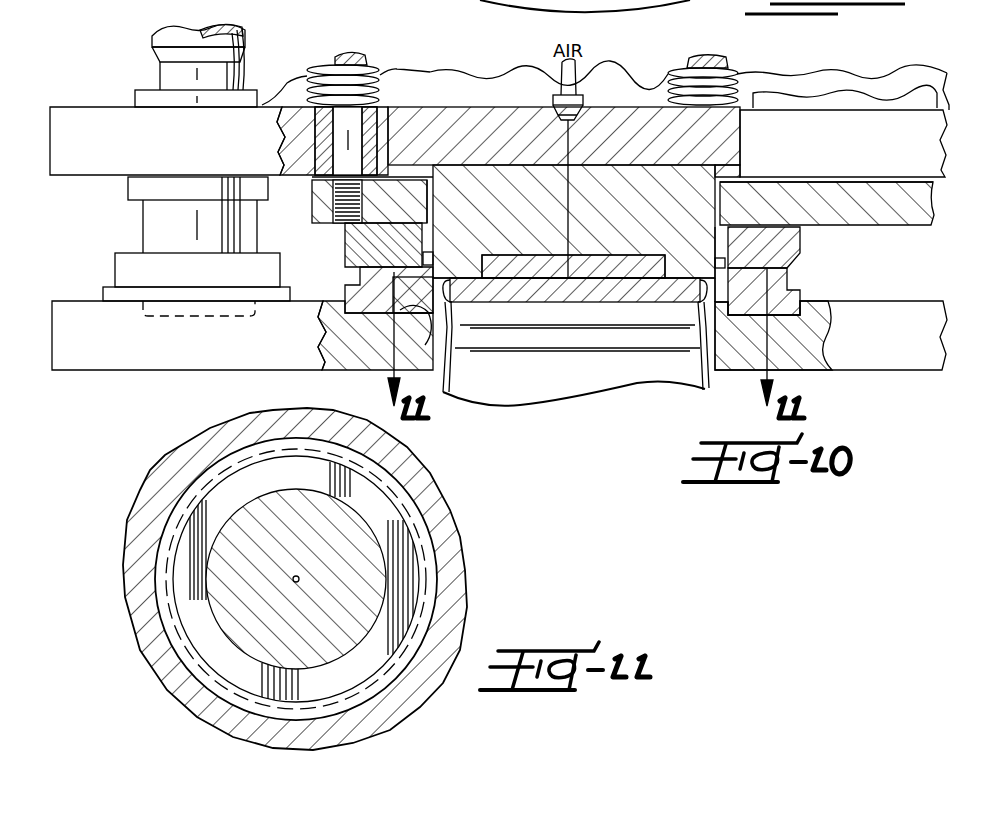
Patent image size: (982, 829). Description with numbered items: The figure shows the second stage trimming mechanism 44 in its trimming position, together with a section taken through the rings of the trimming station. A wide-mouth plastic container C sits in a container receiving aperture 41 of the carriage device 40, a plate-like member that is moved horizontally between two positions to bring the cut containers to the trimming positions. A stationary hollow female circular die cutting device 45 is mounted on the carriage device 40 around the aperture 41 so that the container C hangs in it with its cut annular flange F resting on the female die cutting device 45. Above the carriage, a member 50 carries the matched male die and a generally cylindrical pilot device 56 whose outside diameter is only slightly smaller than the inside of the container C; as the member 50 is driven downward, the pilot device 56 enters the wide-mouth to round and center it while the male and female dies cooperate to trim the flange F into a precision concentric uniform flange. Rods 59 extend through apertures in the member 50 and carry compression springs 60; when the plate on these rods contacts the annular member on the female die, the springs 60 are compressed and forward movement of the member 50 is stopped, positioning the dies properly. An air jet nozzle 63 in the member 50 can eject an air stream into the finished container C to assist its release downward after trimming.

In FIG. 10, the carriage device 40 is at (278, 352).
In FIG. 10, the container receiving apertures 41 is at (430, 338).
In FIG. 10, the trimming mechanism 44 is at (790, 272).
In FIG. 11, the trimming mechanism 44 is at (445, 523).
In FIG. 10, the female circular die cutting device 45 is at (360, 278).
In FIG. 11, the female circular die cutting device 45 is at (468, 572).
In FIG. 10, the member 50 is at (207, 155).
In FIG. 11, the pilot device 56 is at (172, 574).
In FIG. 10, the rod 59 is at (333, 57).
In FIG. 10, the compression spring 60 is at (379, 69).
In FIG. 10, the air jet nozzle 63 is at (586, 110).
In FIG. 10, the wide-mouth plastic container C is at (580, 384).
In FIG. 10, the annular flange F is at (433, 258).
In FIG. 11, the annular flange F is at (160, 585).